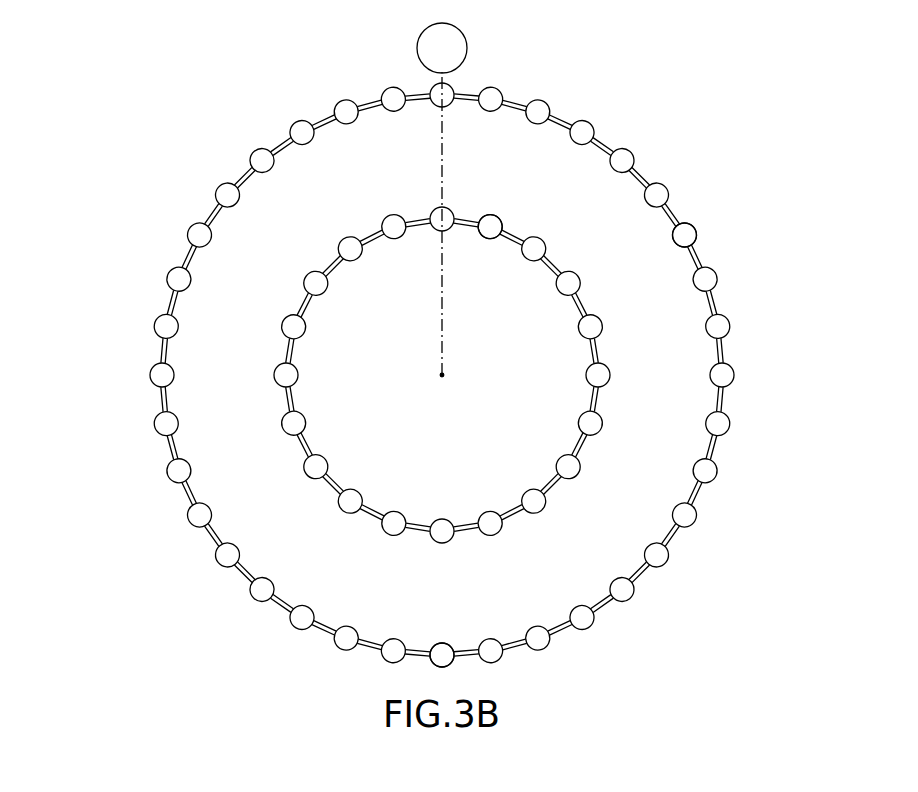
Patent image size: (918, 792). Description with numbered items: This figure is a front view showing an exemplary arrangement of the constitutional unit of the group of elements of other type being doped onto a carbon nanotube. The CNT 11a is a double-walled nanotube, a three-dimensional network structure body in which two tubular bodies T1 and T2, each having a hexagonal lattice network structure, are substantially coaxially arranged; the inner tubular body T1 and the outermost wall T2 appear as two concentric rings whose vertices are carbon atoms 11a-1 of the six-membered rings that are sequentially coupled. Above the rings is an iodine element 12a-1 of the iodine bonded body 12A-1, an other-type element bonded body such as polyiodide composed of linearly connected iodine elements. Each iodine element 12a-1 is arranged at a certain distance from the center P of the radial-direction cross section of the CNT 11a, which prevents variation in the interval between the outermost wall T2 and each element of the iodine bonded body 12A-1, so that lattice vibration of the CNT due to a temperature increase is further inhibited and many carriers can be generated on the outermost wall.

The CNT 11a is at (681, 210).
The carbon atom 11a-1 is at (688, 238).
The iodine element 12a-1 is at (426, 50).
The iodine bonded body 12A-1 is at (481, 45).
The tubular body T1 is at (287, 348).
The tubular body T2 is at (403, 375).
The center of radial-direction cross section P is at (444, 377).